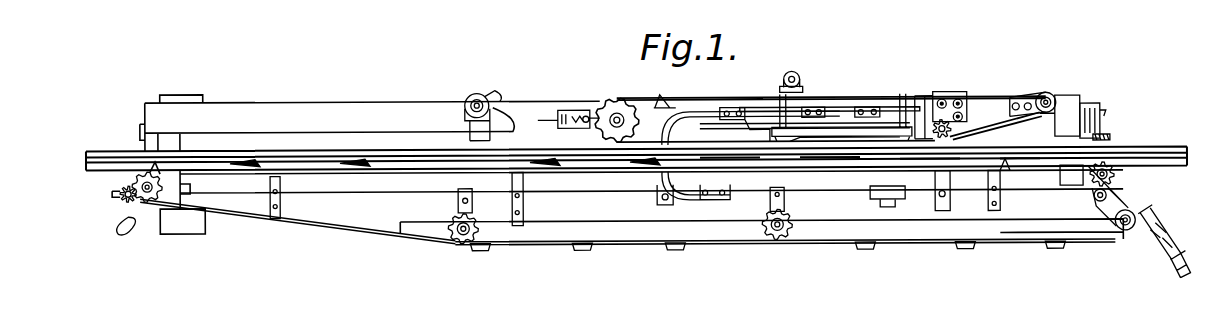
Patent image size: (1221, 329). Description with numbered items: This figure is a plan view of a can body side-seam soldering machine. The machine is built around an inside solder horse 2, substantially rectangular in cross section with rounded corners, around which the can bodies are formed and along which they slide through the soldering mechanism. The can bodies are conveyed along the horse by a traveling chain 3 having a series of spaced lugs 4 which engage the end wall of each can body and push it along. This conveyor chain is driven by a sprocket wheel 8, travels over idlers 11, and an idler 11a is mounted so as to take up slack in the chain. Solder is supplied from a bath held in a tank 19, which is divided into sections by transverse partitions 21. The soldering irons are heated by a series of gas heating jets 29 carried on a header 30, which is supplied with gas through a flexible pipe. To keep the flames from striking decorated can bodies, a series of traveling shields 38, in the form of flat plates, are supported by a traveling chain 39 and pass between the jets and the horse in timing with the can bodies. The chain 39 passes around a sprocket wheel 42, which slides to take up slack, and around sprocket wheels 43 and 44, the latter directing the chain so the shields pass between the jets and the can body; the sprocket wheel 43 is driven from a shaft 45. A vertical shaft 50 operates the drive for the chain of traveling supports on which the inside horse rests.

The inside solder horse 2 is at (1152, 149).
The traveling chain 3 is at (1013, 241).
The lugs 4 is at (1005, 160).
The sprocket wheel 8 is at (148, 190).
The idlers 11 is at (463, 242).
The idler 11a is at (1140, 214).
The tank 19 is at (897, 188).
The transverse partitions 21 is at (722, 132).
The heating jets 29 is at (812, 137).
The header 30 is at (845, 132).
The traveling shields 38 is at (765, 137).
The traveling chain 39 is at (815, 93).
The sprocket wheel 42 is at (604, 113).
The sprocket wheel 43 is at (1054, 96).
The sprocket wheel 44 is at (950, 93).
The shaft 45 is at (1101, 118).
The vertical shaft 50 is at (490, 74).